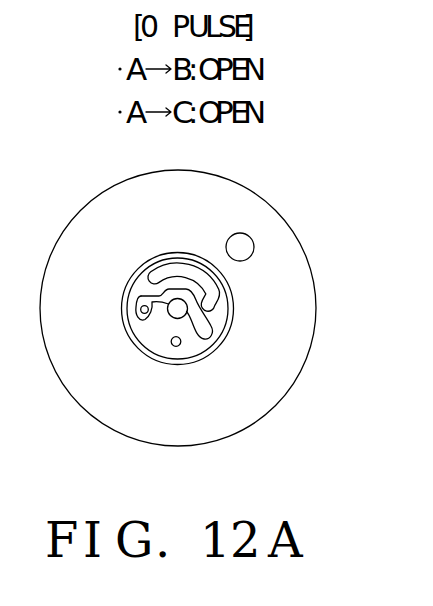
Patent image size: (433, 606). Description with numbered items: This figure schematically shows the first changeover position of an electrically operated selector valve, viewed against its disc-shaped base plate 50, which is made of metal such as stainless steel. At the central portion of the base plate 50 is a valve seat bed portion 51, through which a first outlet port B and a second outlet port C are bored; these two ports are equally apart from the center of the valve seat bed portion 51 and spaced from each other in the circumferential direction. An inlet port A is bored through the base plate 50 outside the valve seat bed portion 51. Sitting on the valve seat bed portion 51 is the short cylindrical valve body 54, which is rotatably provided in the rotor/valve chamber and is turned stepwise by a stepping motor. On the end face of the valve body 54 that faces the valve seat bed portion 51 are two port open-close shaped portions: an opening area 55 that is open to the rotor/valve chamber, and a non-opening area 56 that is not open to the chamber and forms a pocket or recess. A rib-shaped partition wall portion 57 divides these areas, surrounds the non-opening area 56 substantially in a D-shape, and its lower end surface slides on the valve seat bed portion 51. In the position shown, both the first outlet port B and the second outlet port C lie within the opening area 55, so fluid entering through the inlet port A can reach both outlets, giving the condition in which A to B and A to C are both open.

The base plate 50 is at (178, 390).
The valve seat bed portion 51 is at (147, 345).
The valve body 54 is at (199, 248).
The opening area 55 is at (188, 333).
The non-opening area 56 is at (207, 303).
The partition wall portion 57 is at (215, 292).
The inlet port A is at (250, 245).
The first outlet port B is at (177, 348).
The second outlet port C is at (135, 324).